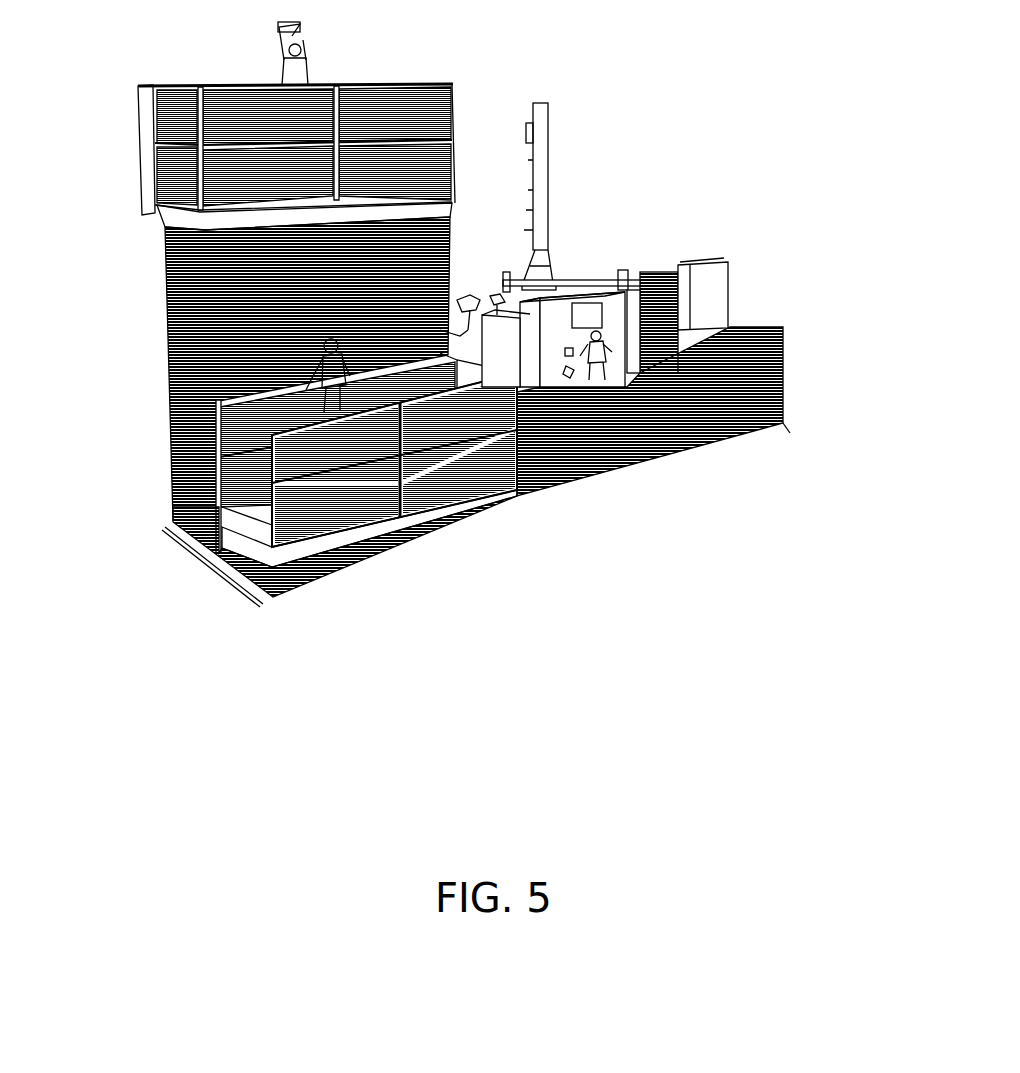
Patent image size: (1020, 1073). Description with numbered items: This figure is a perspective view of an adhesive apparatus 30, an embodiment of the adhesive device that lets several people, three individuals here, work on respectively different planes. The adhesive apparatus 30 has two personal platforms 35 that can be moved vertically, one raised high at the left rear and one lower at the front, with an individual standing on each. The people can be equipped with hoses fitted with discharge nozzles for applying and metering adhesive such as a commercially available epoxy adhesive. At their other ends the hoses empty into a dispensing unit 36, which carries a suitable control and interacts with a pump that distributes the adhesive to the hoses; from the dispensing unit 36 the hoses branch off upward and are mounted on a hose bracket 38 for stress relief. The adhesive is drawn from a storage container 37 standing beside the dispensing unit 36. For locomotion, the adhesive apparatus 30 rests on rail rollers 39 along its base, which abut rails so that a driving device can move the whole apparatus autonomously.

The adhesive apparatus 30 is at (593, 77).
The personal platform 35 is at (188, 220).
The dispensing unit 36 is at (558, 305).
The storage container 37 is at (662, 273).
The hose bracket 38 is at (540, 226).
The rail rollers 39 is at (337, 578).